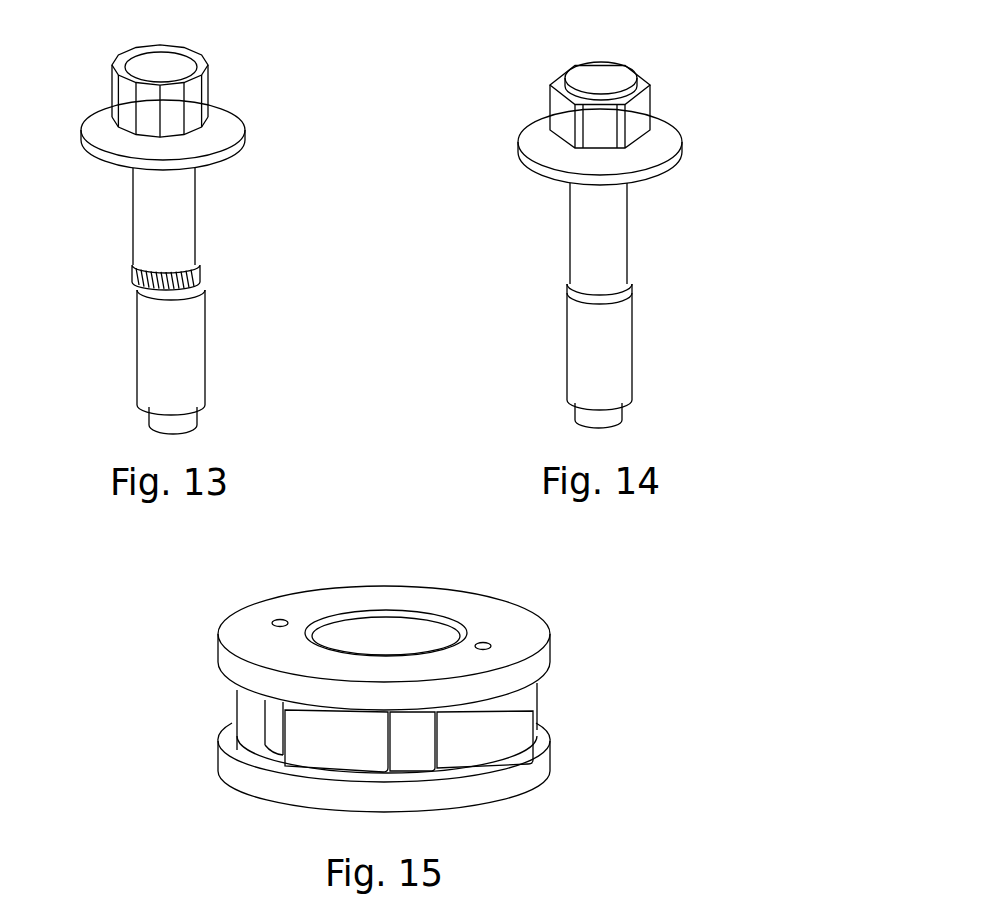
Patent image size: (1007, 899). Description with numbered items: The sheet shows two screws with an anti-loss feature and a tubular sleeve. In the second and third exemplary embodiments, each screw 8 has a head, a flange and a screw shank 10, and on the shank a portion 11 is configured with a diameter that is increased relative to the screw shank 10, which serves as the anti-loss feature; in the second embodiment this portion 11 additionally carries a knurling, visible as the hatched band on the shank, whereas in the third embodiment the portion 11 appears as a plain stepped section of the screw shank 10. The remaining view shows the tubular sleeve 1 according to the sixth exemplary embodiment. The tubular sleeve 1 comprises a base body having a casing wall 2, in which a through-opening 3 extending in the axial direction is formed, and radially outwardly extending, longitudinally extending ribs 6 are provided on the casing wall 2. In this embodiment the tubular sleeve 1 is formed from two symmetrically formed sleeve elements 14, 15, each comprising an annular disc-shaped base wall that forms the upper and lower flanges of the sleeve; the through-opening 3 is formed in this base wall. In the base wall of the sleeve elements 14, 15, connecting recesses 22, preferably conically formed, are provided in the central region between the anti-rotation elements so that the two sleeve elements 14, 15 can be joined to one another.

In FIG. 15, the tubular sleeve 1 is at (477, 678).
In FIG. 15, the casing wall 2 is at (499, 745).
In FIG. 15, the through-opening 3 is at (372, 628).
In FIG. 15, the ribs 6 is at (348, 757).
In FIG. 13, the screw 8 is at (157, 60).
In FIG. 14, the screw 8 is at (608, 73).
In FIG. 13, the screw shank 10 is at (147, 216).
In FIG. 14, the screw shank 10 is at (613, 232).
In FIG. 13, the portion 11 is at (193, 268).
In FIG. 15, the sleeve element 14 is at (490, 612).
In FIG. 15, the sleeve element 15 is at (515, 778).
In FIG. 15, the connecting recesses 22 is at (490, 645).